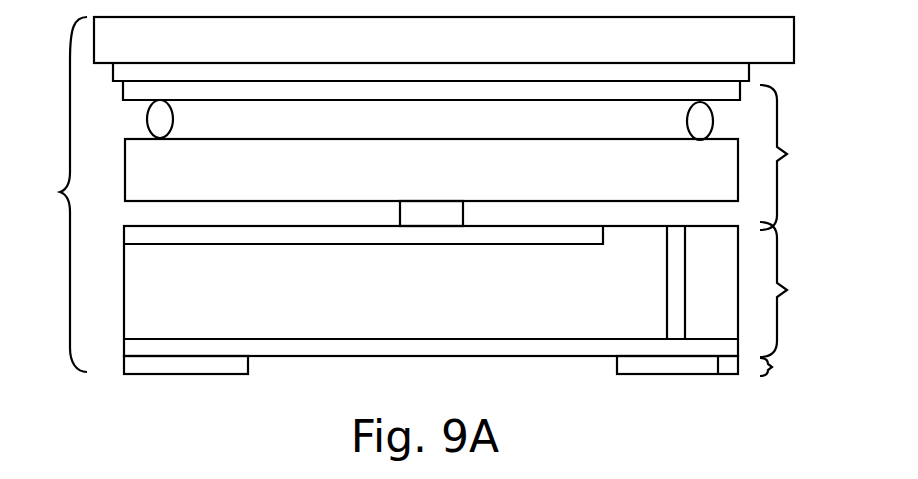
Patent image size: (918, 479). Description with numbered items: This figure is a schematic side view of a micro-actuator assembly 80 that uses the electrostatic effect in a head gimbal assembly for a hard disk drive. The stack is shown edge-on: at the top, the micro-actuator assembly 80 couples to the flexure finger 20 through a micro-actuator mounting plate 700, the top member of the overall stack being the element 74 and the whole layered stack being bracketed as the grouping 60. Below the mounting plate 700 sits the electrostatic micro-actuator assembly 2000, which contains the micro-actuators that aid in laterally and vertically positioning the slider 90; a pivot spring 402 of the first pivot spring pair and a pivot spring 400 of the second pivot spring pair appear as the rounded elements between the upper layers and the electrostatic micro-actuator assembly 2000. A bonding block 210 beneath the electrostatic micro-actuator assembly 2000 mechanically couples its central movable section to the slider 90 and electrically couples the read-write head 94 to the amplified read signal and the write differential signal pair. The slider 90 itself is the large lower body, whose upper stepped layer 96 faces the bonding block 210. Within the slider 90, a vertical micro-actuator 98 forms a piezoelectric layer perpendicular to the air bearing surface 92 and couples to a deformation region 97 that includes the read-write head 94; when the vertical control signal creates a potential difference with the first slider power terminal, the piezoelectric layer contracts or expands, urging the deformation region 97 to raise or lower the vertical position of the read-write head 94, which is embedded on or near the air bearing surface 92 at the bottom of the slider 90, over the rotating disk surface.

The assembly 60 is at (57, 194).
The top plate / lid 74 is at (444, 40).
The flexure finger 20 is at (750, 71).
The micro-actuator mounting plate 700 is at (423, 102).
The first pivot spring 402 is at (173, 115).
The second pivot spring 400 is at (687, 122).
The micro-actuator assembly 80 is at (792, 157).
The electrostatic micro-actuator assembly 2000 is at (431, 170).
The bonding block 210 is at (400, 215).
The slider 90 is at (478, 289).
The upper layer of package body 96 is at (377, 247).
The vertical micro-actuator 98 is at (667, 292).
The deformation region 97 is at (727, 300).
The air bearing surface 92 is at (474, 368).
The read-write head 94 is at (730, 377).